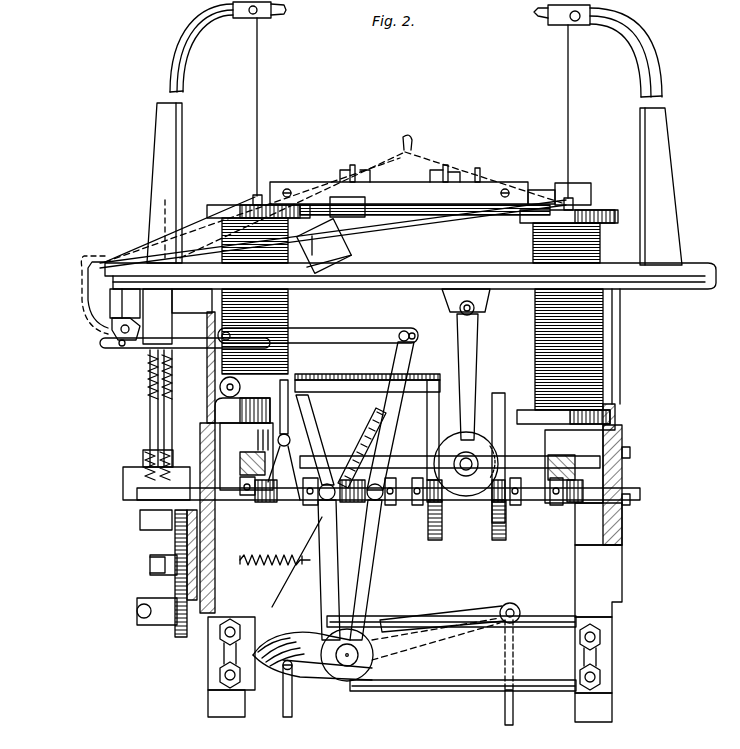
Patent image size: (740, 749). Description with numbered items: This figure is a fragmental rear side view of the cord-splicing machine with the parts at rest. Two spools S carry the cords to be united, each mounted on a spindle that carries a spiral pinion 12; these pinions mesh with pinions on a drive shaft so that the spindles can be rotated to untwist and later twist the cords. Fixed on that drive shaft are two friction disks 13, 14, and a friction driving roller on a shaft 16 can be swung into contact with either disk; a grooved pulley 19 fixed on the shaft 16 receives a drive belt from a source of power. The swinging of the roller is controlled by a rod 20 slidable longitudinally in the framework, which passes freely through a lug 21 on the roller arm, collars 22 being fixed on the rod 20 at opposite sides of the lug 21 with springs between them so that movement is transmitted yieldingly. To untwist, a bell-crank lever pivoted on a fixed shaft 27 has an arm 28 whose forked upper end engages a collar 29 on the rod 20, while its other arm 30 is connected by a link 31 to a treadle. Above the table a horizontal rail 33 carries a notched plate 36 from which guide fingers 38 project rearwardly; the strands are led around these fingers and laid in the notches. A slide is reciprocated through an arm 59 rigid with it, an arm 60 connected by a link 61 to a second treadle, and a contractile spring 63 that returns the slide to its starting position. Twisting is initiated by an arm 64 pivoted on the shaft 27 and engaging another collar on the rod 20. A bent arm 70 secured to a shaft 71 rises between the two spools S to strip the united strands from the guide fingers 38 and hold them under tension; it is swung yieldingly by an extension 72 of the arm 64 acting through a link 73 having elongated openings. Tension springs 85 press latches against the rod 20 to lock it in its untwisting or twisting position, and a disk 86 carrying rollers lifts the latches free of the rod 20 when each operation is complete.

The spools S is at (215, 205).
The spiral pinions 12 is at (250, 460).
The friction disk 13 is at (505, 402).
The friction disk 14 is at (427, 422).
The shaft 16 is at (468, 445).
The grooved pulley 19 is at (458, 490).
The rod 20 is at (545, 502).
The lug 21 is at (462, 500).
The collars 22 is at (412, 505).
The fixed shaft 27 is at (348, 665).
The arm of bell-crank lever 28 is at (345, 590).
The collar 29 is at (318, 462).
The arm of bell-crank lever 30 is at (310, 678).
The link 31 is at (283, 705).
The horizontal rail 33 is at (580, 195).
The plate 36 is at (498, 190).
The guide fingers 38 is at (478, 170).
The arm 59 is at (342, 244).
The arm 60 is at (480, 608).
The link 61 is at (513, 712).
The contractile spring 63 is at (266, 554).
The arm 64 is at (360, 566).
The arm 70 is at (190, 240).
The shaft 71 is at (108, 308).
The extension 72 is at (405, 380).
The link 73 is at (340, 328).
The tension springs 85 is at (165, 408).
The disk 86 is at (175, 628).